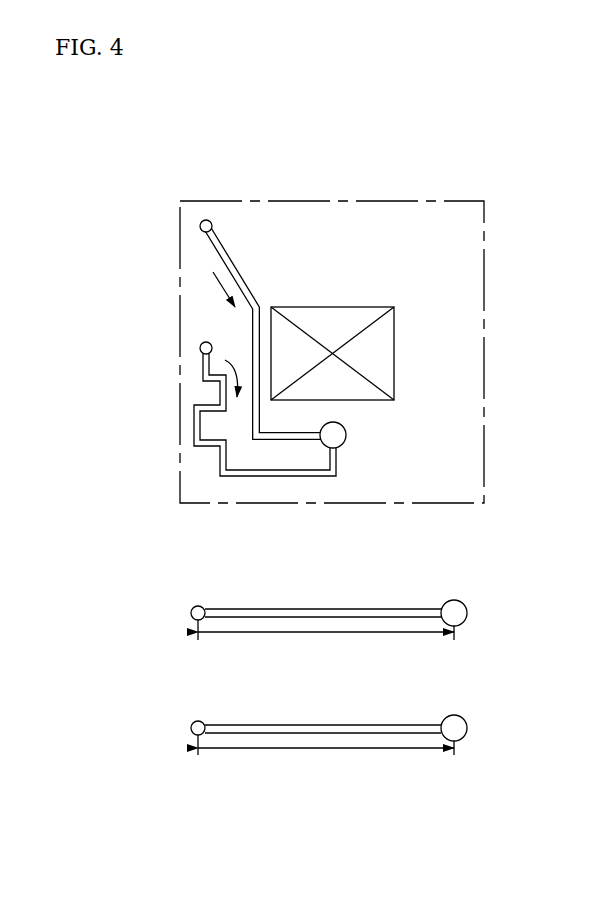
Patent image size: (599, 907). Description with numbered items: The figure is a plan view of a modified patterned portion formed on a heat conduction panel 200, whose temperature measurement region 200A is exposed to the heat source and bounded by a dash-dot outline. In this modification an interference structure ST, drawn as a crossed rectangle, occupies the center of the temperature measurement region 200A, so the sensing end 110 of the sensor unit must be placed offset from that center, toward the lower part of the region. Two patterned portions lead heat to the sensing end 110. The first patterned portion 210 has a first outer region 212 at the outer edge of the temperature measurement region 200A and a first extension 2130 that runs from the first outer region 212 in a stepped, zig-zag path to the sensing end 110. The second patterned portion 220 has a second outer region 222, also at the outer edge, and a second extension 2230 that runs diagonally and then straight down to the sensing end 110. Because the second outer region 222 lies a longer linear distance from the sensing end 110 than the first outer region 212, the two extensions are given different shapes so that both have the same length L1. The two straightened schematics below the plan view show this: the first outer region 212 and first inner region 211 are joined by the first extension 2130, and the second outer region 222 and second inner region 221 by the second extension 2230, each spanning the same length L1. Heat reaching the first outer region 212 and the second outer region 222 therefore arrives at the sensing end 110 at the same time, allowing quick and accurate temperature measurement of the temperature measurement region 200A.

The heat conduction panel 200 is at (211, 161).
The temperature measurement region 200A is at (280, 201).
The interference structure ST is at (360, 307).
The second extension 2230 is at (238, 270).
The first extension 2130 is at (194, 425).
The sensing end 110 is at (345, 443).
The second outer region 222 is at (200, 226).
The first outer region 212 is at (200, 348).
The first inner region 211 is at (454, 600).
The second inner region 221 is at (454, 715).
The length L1 is at (326, 695).
The first patterned portion 210 is at (165, 605).
The second patterned portion 220 is at (165, 720).